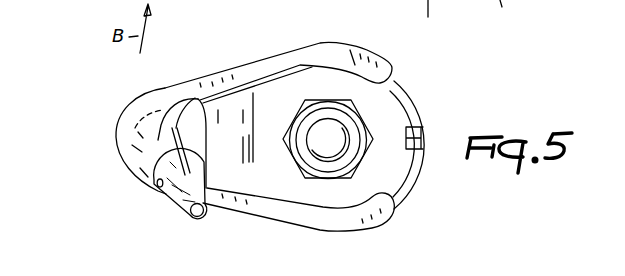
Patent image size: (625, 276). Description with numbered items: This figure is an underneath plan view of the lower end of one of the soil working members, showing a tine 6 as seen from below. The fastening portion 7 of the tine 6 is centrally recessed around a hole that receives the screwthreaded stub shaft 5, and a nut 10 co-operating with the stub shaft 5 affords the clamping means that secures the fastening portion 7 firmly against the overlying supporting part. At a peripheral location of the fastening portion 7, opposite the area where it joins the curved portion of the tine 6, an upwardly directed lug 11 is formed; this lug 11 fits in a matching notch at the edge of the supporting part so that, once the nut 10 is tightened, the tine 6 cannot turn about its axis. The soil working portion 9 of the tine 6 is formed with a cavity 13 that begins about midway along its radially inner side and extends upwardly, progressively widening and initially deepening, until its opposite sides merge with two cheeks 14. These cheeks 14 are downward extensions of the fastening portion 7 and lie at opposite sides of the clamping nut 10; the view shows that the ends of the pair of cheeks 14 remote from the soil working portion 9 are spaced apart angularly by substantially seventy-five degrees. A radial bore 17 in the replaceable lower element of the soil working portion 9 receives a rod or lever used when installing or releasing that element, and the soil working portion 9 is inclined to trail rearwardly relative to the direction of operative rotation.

The stub shaft 5 is at (322, 147).
The tine 6 is at (184, 209).
The fastening portion 7 is at (388, 103).
The soil working portion 9 is at (117, 147).
The nut 10 is at (297, 116).
The lug 11 is at (427, 135).
The cavity 13 is at (160, 124).
The cheeks 14 is at (364, 32).
The radial bore 17 is at (156, 186).